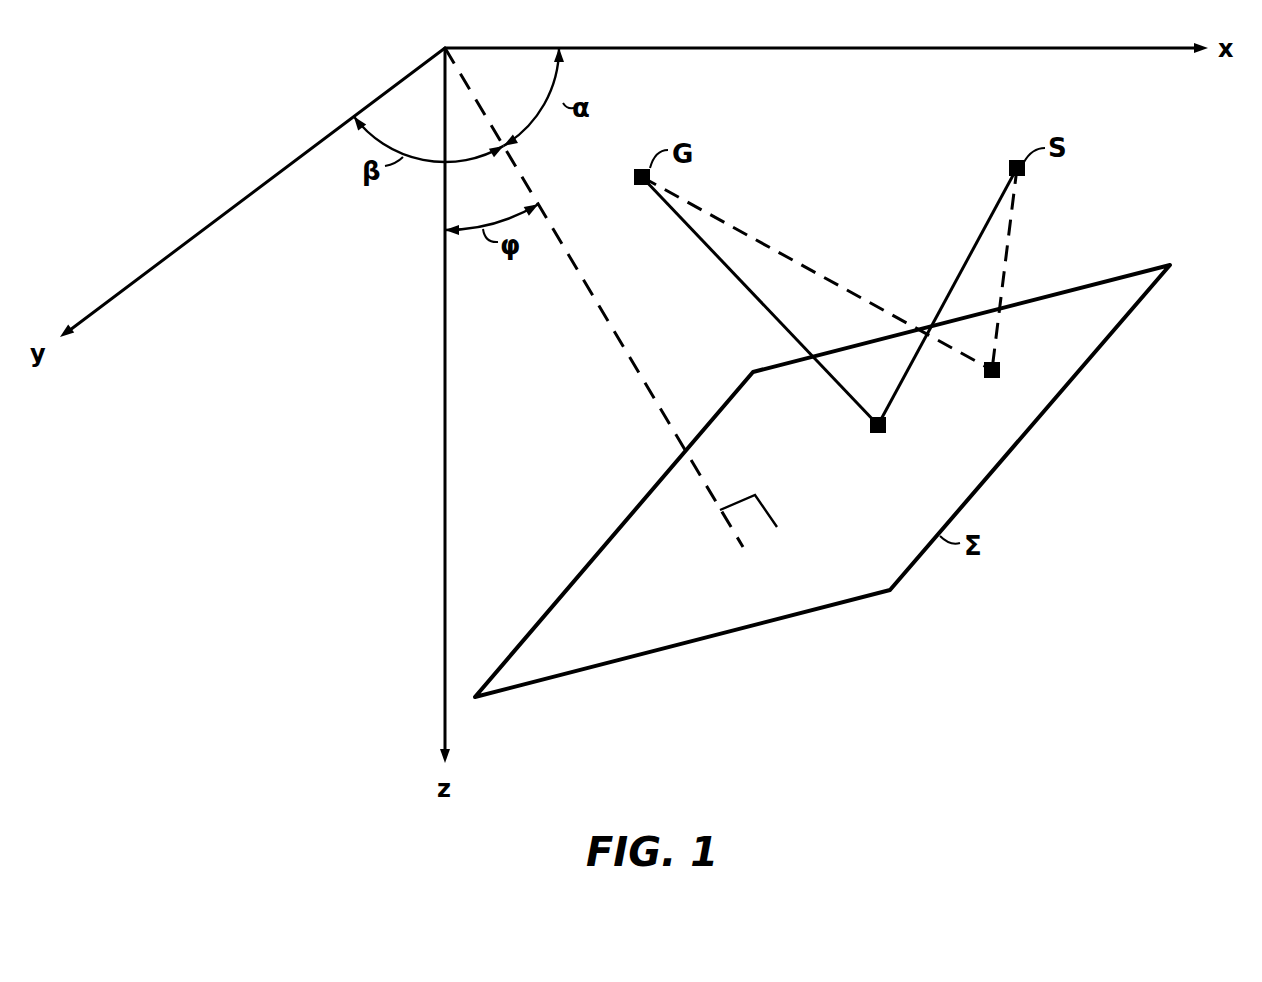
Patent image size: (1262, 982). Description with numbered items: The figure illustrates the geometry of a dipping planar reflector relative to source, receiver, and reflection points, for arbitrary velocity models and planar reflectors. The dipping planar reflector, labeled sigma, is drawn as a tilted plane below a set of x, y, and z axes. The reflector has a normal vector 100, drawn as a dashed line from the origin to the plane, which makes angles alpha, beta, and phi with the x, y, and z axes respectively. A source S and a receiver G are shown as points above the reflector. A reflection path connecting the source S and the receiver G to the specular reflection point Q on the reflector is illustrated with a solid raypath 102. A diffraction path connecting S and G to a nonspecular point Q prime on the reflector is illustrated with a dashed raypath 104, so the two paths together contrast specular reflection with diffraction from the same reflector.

The normal vector 100 is at (620, 338).
The solid raypath 102 is at (752, 293).
The dashed raypath 104 is at (805, 262).